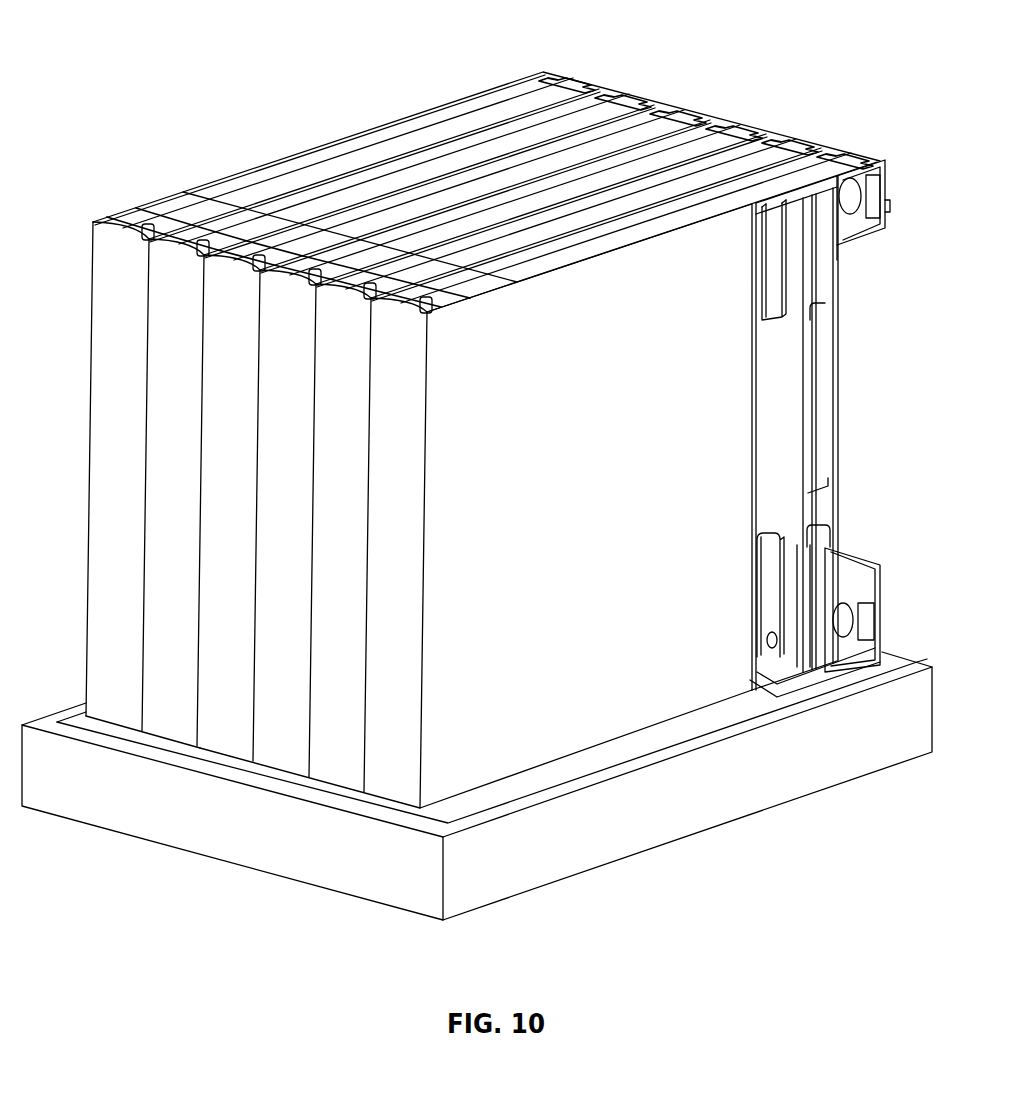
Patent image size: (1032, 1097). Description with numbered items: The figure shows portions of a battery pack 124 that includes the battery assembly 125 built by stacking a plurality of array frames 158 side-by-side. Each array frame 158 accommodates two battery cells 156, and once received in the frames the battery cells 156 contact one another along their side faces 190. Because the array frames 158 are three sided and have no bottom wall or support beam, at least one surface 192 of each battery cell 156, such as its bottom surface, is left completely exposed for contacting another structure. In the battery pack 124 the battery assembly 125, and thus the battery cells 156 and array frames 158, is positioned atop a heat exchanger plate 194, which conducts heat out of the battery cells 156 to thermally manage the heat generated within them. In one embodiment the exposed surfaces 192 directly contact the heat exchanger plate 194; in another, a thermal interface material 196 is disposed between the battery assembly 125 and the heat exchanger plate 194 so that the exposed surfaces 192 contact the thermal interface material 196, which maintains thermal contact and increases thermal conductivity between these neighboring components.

The battery pack 124 is at (236, 110).
The battery assembly 125 is at (527, 72).
The battery cell 156 is at (705, 372).
The array frame 158 is at (728, 108).
The side face 190 is at (598, 515).
The surface 192 is at (108, 725).
The heat exchanger plate 194 is at (328, 833).
The thermal interface material 196 is at (629, 758).